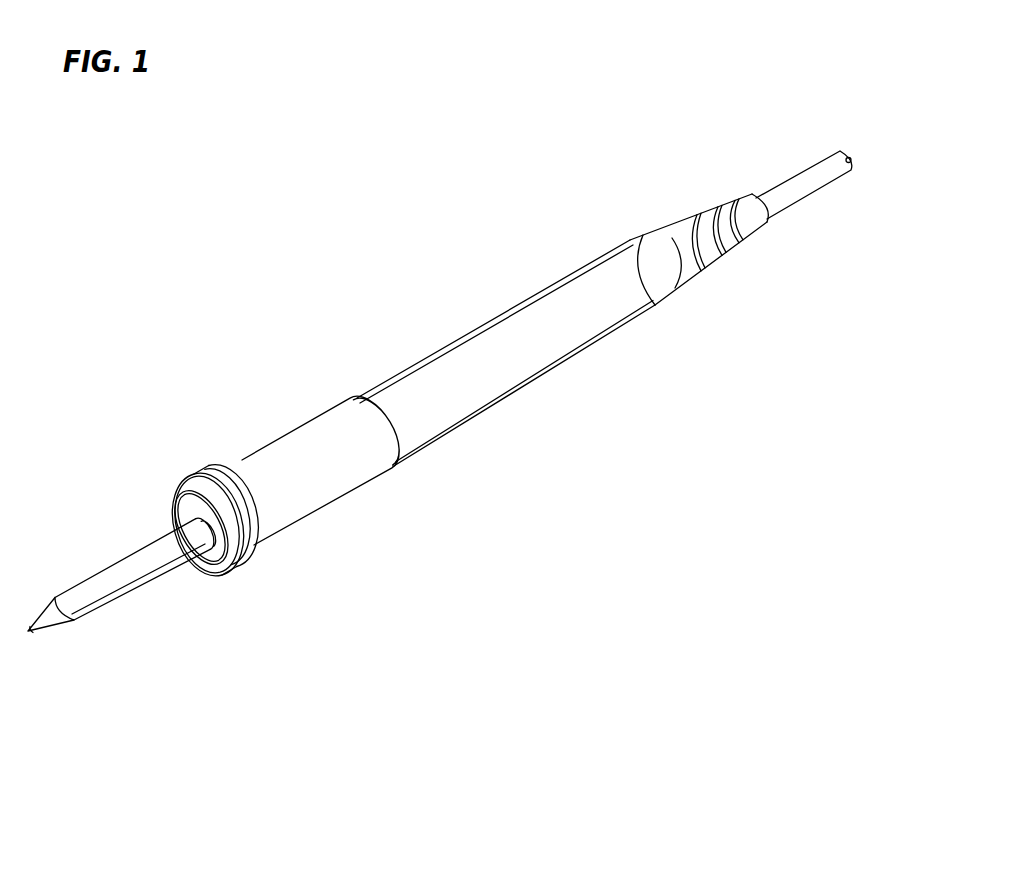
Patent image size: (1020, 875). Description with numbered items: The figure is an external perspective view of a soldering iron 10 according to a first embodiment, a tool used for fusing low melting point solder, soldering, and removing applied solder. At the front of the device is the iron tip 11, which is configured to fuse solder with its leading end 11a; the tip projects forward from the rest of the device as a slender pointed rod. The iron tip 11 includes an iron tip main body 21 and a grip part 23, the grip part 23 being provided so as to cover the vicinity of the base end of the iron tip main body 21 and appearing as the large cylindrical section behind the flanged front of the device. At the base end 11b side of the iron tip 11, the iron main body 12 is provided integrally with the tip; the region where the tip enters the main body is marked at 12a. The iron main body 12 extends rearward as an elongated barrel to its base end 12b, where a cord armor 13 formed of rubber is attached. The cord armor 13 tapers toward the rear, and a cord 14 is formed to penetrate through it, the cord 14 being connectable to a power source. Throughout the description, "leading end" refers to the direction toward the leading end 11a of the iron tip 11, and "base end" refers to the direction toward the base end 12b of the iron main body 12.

The soldering iron 10 is at (470, 565).
The iron tip 11 is at (104, 560).
The leading end 11a is at (44, 631).
The base end 11b is at (211, 536).
The iron main body 12 is at (473, 312).
The front flange ring 12a is at (223, 577).
The base end 12b is at (769, 224).
The cord armor 13 is at (697, 272).
The cord 14 is at (800, 177).
The iron tip main body 21 is at (135, 572).
The grip part 23 is at (327, 487).